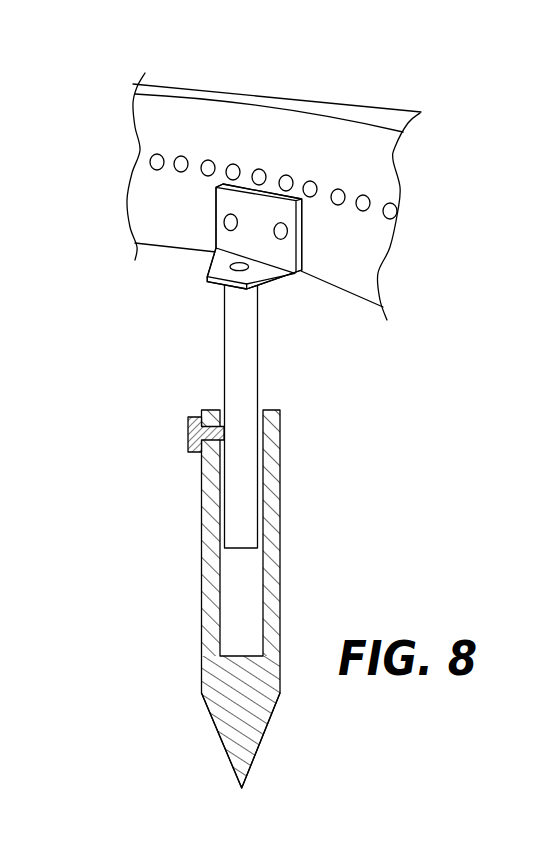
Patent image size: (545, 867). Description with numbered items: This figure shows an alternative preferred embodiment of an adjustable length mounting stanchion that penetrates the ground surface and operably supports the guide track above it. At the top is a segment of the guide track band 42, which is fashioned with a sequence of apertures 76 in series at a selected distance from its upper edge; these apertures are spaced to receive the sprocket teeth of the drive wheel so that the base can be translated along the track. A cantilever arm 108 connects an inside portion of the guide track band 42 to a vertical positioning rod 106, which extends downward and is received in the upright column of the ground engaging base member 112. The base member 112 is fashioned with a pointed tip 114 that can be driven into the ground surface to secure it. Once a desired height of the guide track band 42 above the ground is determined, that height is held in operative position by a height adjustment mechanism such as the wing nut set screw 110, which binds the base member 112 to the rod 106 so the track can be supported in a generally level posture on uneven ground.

The guide track band 42 is at (312, 113).
The apertures 76 is at (208, 157).
The vertical positioning rod 106 is at (225, 338).
The cantilever arm 108 is at (216, 217).
The wing nut set screw 110 is at (201, 415).
The base member 112 is at (270, 470).
The pointed tip 114 is at (252, 794).